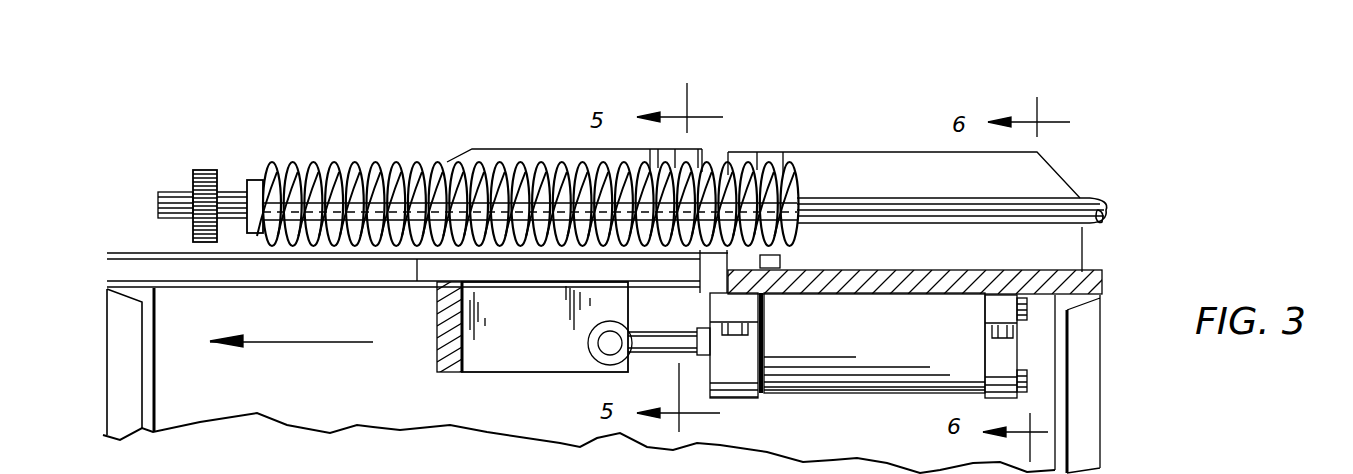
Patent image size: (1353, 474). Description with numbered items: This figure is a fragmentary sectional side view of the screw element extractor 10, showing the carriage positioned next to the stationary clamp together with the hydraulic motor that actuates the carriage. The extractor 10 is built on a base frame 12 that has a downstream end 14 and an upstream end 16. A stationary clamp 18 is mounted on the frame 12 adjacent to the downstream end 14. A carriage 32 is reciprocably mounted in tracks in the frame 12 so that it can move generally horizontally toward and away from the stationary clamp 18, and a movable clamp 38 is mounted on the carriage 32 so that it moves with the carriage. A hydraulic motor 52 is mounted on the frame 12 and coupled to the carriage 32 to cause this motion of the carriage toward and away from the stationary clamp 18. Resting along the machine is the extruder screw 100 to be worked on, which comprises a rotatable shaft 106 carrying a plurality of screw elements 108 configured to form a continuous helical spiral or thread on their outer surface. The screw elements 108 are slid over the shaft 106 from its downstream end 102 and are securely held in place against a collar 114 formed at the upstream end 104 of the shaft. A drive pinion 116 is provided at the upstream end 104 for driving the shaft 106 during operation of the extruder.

The screw element extractor 10 is at (889, 108).
The base frame 12 is at (387, 413).
The downstream end 14 is at (1102, 377).
The upstream end 16 is at (122, 373).
The stationary clamp 18 is at (767, 140).
The carriage 32 is at (502, 153).
The movable clamp 38 is at (707, 143).
The hydraulic motor 52 is at (903, 349).
The extruder screw 100 is at (453, 149).
The downstream end 102 is at (1090, 212).
The upstream end 104 is at (170, 195).
The rotatable shaft 106 is at (957, 213).
The screw elements 108 is at (442, 167).
The collar 114 is at (255, 180).
The drive pinion 116 is at (205, 172).